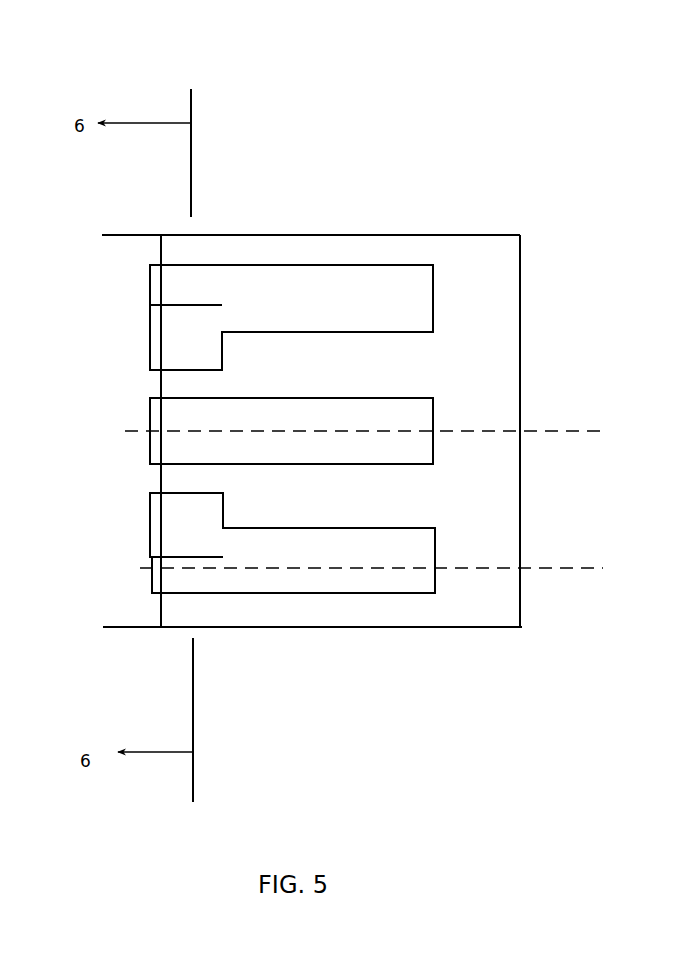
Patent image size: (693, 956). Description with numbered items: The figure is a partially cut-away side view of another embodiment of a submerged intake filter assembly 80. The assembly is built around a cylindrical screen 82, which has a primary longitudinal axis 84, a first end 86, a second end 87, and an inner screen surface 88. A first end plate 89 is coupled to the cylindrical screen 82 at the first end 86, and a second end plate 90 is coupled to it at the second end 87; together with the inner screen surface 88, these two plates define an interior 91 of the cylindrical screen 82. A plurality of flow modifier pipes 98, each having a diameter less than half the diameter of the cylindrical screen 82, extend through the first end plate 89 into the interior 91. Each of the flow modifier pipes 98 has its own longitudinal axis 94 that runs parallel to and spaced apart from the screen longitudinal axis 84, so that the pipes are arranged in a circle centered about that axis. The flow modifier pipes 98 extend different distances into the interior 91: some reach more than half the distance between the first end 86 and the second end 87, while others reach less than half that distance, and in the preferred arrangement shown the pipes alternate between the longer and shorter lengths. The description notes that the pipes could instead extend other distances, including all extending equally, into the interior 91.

The submerged intake filter assembly 80 is at (340, 94).
The cylindrical screen 82 is at (377, 228).
The primary longitudinal axis 84 is at (596, 426).
The first end 86 is at (160, 630).
The second end 87 is at (524, 630).
The inner screen surface 88 is at (413, 240).
The first end plate 89 is at (161, 477).
The second end plate 90 is at (523, 354).
The interior 91 is at (498, 251).
The longitudinal axis 94 is at (603, 564).
The flow modifier pipes 98 is at (412, 598).